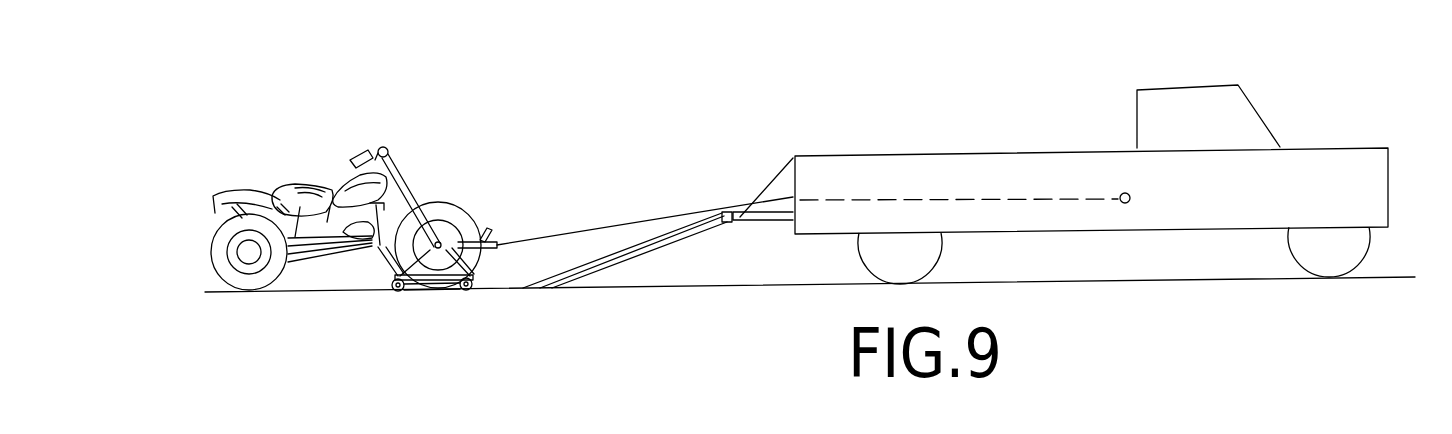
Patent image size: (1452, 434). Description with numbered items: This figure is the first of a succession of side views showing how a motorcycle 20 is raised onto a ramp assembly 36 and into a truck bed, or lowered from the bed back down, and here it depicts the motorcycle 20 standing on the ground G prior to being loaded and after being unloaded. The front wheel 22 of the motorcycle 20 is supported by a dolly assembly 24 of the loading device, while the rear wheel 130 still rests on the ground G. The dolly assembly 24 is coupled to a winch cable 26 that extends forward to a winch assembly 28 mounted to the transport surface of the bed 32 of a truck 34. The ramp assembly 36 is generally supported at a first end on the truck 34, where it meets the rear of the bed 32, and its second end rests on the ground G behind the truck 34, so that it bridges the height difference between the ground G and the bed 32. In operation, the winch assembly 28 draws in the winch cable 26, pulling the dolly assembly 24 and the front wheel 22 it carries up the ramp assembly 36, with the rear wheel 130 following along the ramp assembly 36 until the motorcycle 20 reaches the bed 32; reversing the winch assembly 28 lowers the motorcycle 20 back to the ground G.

The motorcycle 20 is at (324, 164).
The front wheel 22 is at (452, 208).
The dolly assembly 24 is at (430, 296).
The winch cable 26 is at (600, 227).
The winch assembly 28 is at (1121, 193).
The bed 32 is at (967, 153).
The truck 34 is at (1177, 62).
The ramp assembly 36 is at (642, 245).
The rear wheel 130 is at (222, 266).
The ground G is at (717, 288).